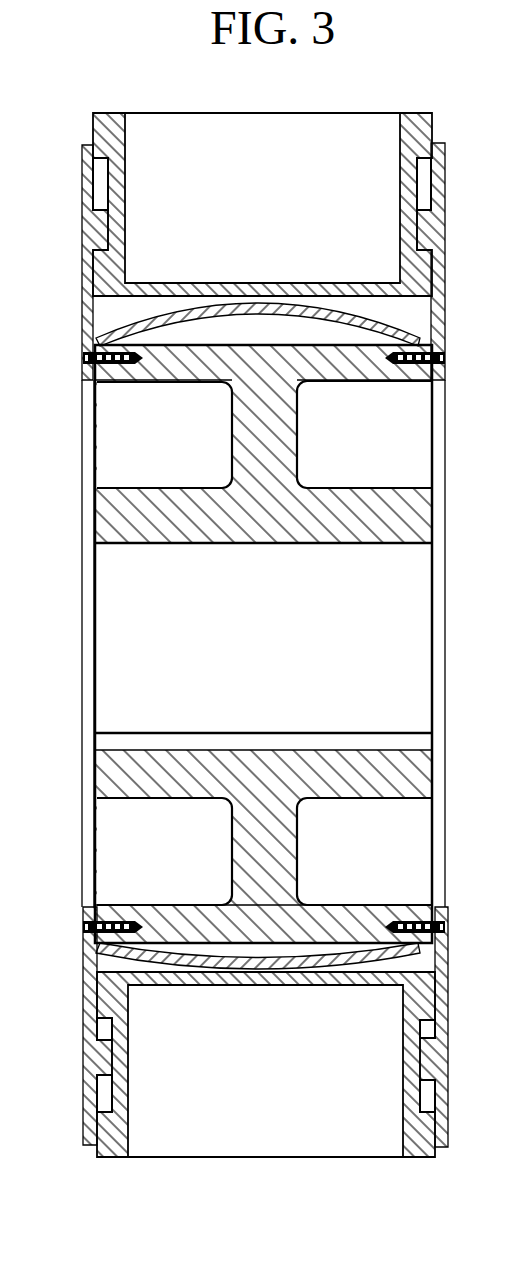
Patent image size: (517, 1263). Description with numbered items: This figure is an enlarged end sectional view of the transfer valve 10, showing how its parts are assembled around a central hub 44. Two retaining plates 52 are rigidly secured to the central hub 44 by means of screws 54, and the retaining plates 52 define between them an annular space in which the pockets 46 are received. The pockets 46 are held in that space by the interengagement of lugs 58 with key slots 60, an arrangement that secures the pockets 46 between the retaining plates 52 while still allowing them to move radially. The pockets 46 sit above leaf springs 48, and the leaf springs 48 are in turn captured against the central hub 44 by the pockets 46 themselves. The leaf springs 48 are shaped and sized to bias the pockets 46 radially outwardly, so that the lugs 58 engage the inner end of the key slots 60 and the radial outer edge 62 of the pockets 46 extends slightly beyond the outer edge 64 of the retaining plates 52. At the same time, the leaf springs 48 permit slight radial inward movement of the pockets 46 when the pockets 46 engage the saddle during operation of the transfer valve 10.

The transfer valve 10 is at (128, 68).
The central hub 44 is at (100, 528).
The pockets 46 is at (424, 123).
The leaf springs 48 is at (405, 330).
The retaining plates 52 is at (88, 624).
The screws 54 is at (83, 360).
The lugs 58 is at (440, 222).
The key slots 60 is at (415, 162).
The radial outer edge 62 is at (106, 112).
The outer edge 64 is at (87, 145).